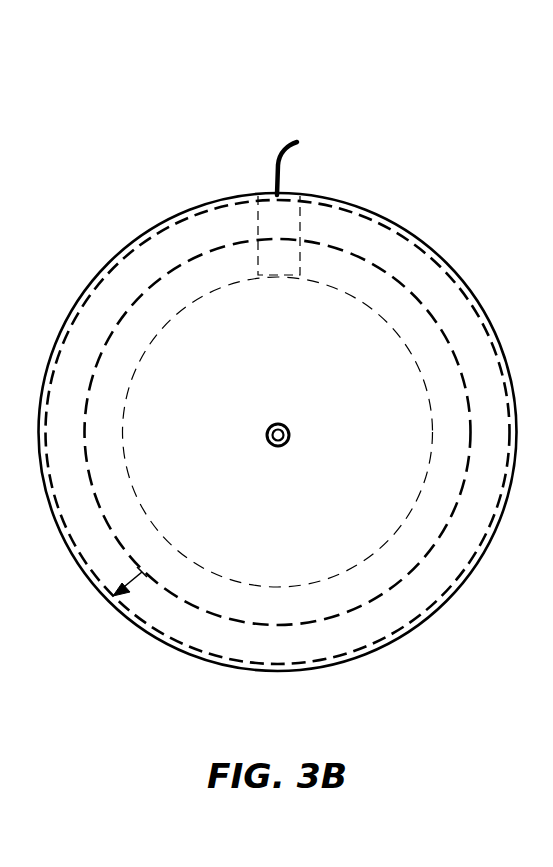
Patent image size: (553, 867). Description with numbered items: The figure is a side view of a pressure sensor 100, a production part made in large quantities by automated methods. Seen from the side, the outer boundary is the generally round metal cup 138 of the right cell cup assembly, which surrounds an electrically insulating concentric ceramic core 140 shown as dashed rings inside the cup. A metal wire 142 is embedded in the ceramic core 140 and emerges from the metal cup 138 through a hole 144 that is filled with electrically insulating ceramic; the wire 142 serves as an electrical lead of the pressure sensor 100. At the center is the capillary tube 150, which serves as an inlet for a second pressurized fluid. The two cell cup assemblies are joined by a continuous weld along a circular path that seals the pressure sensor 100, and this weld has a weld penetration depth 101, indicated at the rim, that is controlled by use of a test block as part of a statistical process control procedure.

The pressure sensor 100 is at (195, 110).
The weld penetration depth 101 is at (127, 583).
The metal cup 138 is at (140, 243).
The ceramic core 140 is at (355, 568).
The metal wire 142 is at (283, 150).
The hole 144 is at (301, 224).
The capillary tube 150 is at (269, 447).